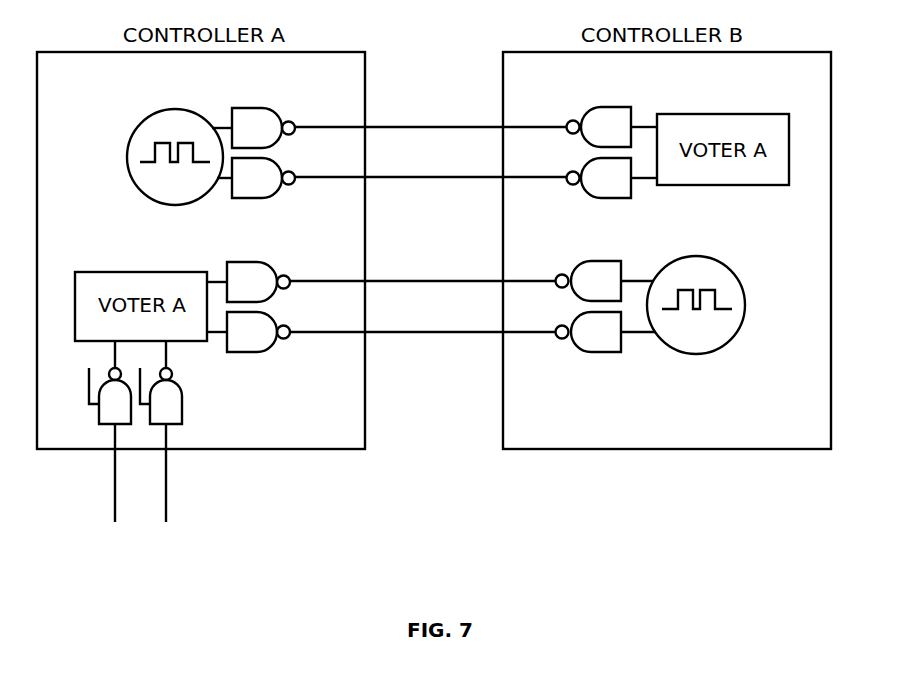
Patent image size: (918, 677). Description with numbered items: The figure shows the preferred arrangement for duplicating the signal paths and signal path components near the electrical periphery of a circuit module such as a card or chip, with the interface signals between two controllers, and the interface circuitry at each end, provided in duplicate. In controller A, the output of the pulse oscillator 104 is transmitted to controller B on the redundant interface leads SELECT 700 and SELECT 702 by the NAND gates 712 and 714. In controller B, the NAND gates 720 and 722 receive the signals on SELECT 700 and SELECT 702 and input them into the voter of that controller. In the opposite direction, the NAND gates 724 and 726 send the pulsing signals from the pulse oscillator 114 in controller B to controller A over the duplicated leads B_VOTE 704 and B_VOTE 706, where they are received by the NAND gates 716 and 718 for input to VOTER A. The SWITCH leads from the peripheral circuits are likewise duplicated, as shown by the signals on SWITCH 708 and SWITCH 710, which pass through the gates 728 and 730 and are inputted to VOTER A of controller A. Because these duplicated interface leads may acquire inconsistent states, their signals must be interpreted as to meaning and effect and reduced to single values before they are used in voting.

The pulse oscillator 104 is at (150, 144).
The pulse oscillator 114 is at (706, 288).
The NAND gate 712 is at (263, 128).
The NAND gate 714 is at (263, 178).
The NAND gate 716 is at (258, 282).
The NAND gate 718 is at (258, 332).
The NAND gate 720 is at (599, 127).
The NAND gate 722 is at (599, 178).
The NAND gate 724 is at (589, 281).
The NAND gate 726 is at (589, 332).
The switch gate 728 is at (101, 382).
The switch gate 730 is at (152, 382).
The SELECT interface lead 700 is at (431, 112).
The SELECT interface lead 702 is at (431, 162).
The B_VOTE interface lead 704 is at (423, 267).
The B_VOTE interface lead 706 is at (423, 318).
The SWITCH lead 708 is at (148, 504).
The SWITCH lead 710 is at (97, 504).